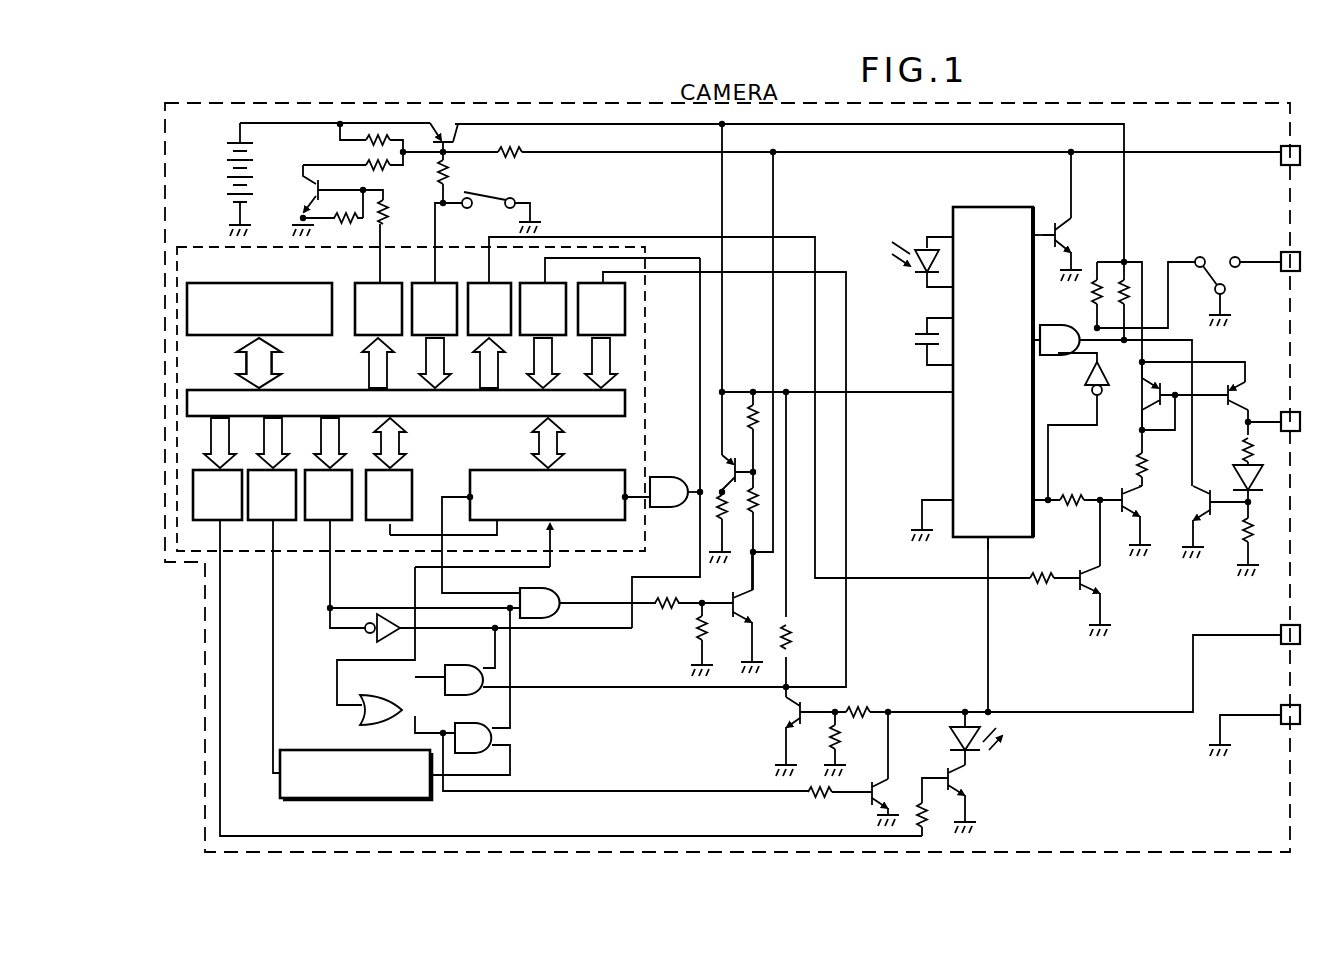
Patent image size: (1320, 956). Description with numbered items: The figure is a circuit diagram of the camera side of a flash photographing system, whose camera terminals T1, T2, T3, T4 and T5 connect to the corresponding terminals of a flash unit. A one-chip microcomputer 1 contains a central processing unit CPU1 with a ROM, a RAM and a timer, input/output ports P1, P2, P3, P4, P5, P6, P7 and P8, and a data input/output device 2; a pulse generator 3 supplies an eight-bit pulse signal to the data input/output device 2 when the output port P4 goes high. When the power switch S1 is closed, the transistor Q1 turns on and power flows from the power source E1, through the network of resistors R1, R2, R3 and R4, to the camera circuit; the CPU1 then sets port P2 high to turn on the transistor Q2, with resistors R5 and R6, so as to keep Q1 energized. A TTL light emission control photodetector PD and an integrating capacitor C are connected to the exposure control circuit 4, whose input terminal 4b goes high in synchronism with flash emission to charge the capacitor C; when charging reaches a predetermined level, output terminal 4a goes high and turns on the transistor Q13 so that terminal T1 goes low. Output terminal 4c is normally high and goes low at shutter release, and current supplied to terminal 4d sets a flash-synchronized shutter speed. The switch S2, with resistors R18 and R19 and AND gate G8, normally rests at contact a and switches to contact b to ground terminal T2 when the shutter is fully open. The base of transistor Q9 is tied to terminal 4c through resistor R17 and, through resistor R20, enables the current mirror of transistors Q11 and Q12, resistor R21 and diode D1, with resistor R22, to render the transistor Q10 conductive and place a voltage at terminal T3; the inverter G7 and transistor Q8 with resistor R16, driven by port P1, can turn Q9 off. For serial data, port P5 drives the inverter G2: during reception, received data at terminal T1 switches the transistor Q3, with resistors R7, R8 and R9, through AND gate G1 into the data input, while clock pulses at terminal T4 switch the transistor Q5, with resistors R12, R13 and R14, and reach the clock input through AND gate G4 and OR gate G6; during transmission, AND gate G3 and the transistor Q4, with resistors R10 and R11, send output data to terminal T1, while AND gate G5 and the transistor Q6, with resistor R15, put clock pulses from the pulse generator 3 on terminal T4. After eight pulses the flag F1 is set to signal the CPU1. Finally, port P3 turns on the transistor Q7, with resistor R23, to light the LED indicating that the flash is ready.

The one-chip microcomputer 1 is at (642, 355).
The central processing unit CPU1 is at (259, 309).
The data input/output device 2 is at (590, 520).
The pulse generator 3 is at (426, 800).
The exposure control circuit 4 is at (992, 207).
The output terminal 4a is at (1021, 236).
The input terminal 4b is at (1020, 341).
The output terminal 4c is at (1024, 500).
The terminal 4d is at (986, 531).
The output port P1 is at (489, 309).
The output port P2 is at (378, 309).
The output port P3 is at (217, 495).
The output port P4 is at (272, 495).
The output port P5 is at (328, 495).
The input port P6 is at (543, 309).
The input/output port P7 is at (434, 309).
The input/output port P8 is at (601, 309).
The flag F1 is at (389, 495).
The power source E1 is at (228, 172).
The transistor Q1 is at (438, 136).
The transistor Q2 is at (312, 188).
The transistor Q3 is at (730, 460).
The transistor Q4 is at (740, 608).
The transistor Q5 is at (800, 713).
The transistor Q6 is at (882, 790).
The transistor Q7 is at (960, 780).
The transistor Q8 is at (1090, 586).
The transistor Q9 is at (1143, 515).
The transistor Q10 is at (1205, 494).
The transistor Q11 is at (1155, 390).
The transistor Q12 is at (1260, 396).
The transistor Q13 is at (1080, 235).
The resistor R1 is at (366, 141).
The resistor R2 is at (386, 167).
The resistor R3 is at (514, 148).
The resistor R4 is at (449, 168).
The resistor R5 is at (345, 226).
The resistor R6 is at (389, 210).
The resistor R7 is at (715, 512).
The resistor R8 is at (751, 408).
The resistor R9 is at (745, 505).
The resistor R10 is at (658, 615).
The resistor R11 is at (695, 632).
The resistor R12 is at (792, 637).
The resistor R13 is at (828, 735).
The resistor R14 is at (858, 705).
The resistor R15 is at (814, 798).
The resistor R16 is at (1036, 586).
The resistor R17 is at (1068, 494).
The resistor R18 is at (1092, 292).
The resistor R19 is at (1127, 282).
The resistor R20 is at (1136, 458).
The resistor R21 is at (1243, 450).
The resistor R22 is at (1244, 540).
The resistor R23 is at (930, 815).
The power switch S1 is at (498, 197).
The switch S2 is at (1212, 257).
The AND gate G1 is at (670, 483).
The inverter G2 is at (372, 634).
The AND gate G3 is at (553, 590).
The AND gate G4 is at (460, 666).
The AND gate G5 is at (470, 724).
The OR gate G6 is at (365, 708).
The inverter G7 is at (1088, 384).
The AND gate G8 is at (1068, 355).
The TTL light emission control photodetector PD is at (910, 240).
The TTL light emission control integrating capacitor C is at (912, 338).
The diode D1 is at (1240, 476).
The light emitting diode LED is at (1003, 744).
The camera terminal T1 is at (1286, 168).
The camera terminal T2 is at (1288, 272).
The camera terminal T3 is at (1288, 432).
The camera terminal T4 is at (1286, 645).
The camera terminal T5 is at (1285, 725).